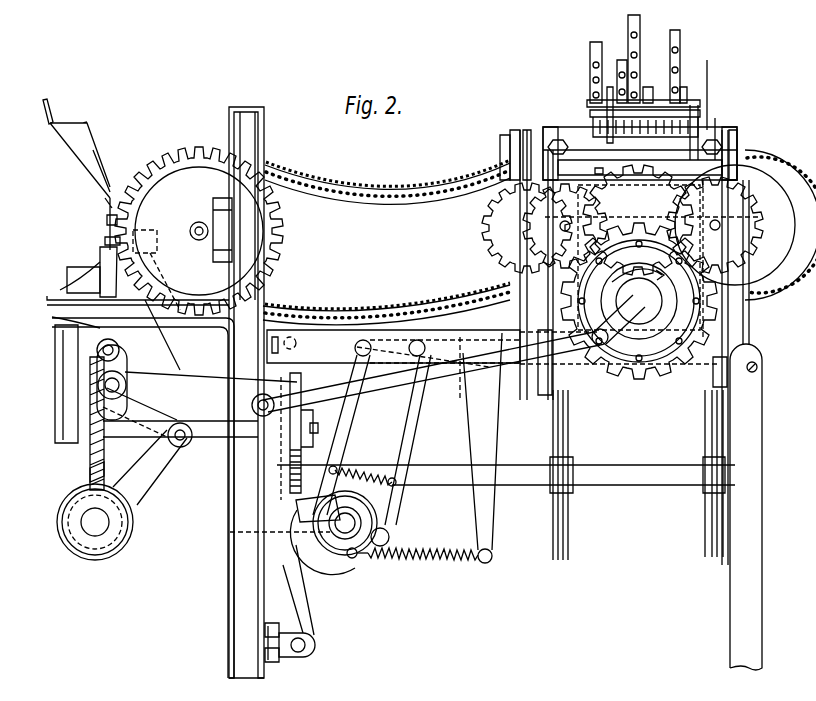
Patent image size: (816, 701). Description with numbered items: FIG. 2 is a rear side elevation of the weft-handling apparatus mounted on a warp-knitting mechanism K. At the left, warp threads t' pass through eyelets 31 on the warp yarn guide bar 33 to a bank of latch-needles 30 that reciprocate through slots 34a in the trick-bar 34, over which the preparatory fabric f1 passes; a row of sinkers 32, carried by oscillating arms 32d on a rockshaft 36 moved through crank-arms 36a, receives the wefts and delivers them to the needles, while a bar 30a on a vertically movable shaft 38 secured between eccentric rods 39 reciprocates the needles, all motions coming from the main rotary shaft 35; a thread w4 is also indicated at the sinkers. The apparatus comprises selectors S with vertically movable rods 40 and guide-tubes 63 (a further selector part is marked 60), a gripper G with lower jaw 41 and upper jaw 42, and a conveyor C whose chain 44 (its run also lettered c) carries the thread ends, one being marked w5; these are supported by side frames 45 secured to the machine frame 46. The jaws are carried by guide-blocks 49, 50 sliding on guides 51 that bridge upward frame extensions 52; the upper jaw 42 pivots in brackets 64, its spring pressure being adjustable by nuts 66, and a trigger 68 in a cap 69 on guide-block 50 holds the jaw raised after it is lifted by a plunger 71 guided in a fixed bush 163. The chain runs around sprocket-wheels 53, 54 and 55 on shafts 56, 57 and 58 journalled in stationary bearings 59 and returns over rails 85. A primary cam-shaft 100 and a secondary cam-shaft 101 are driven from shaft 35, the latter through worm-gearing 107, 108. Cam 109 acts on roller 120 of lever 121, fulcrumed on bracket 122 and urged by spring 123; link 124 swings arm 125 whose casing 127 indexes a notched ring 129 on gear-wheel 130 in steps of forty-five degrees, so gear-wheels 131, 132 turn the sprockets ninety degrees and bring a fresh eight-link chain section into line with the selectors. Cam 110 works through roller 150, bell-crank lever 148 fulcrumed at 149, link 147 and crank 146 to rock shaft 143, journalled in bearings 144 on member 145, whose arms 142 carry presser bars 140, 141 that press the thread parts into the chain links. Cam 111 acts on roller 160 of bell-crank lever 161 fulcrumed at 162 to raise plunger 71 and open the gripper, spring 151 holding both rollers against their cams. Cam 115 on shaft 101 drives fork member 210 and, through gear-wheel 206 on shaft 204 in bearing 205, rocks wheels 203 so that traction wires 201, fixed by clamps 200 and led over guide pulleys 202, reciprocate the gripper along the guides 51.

The knitting mechanism K is at (128, 170).
The frame of the knitting machine 46 is at (152, 487).
The warp threads t' is at (56, 106).
The warp yarn guide bar 33 is at (92, 140).
The eyelets 31 is at (108, 200).
The sinkers 32 is at (107, 220).
The key w4 is at (110, 232).
The slots 34a is at (105, 241).
The trick-bar 34 is at (100, 250).
The latch-needles 30 is at (100, 262).
The finger f1 is at (60, 290).
The bar 30a is at (63, 318).
The sprocket-wheels 55 is at (199, 231).
The shaft 58 is at (199, 224).
The stationary bearings 59 is at (205, 242).
The oscillating arms 32d is at (175, 350).
The conveyor C is at (387, 182).
The chain link w5 is at (352, 192).
The conveyor chain 44 is at (372, 195).
The chain c is at (600, 226).
The link 147 is at (500, 210).
The gear-wheel 132 is at (505, 240).
The shaft 57 is at (558, 224).
The sprocket-wheels 54 is at (548, 202).
The upward extensions 52 is at (590, 217).
The shaft 56 is at (722, 225).
The sprocket-wheels 53 is at (745, 220).
The gear-wheel 131 is at (760, 240).
The notched ring 129 is at (638, 376).
The gear-wheel 130 is at (662, 376).
The plunger 71 is at (628, 296).
The arm 125 is at (628, 311).
The small casing 127 is at (609, 339).
The selectors S is at (654, 59).
The selector rods 40 is at (592, 52).
The bar 60 is at (596, 62).
The guide-tubes 63 is at (596, 70).
The nuts 66 is at (666, 86).
The arms 142 is at (684, 90).
The presser bar 140 is at (590, 100).
The presser bar 141 is at (590, 113).
The gripper G is at (713, 88).
The brackets 64 is at (562, 130).
The guides 51 is at (555, 130).
The trigger 68 is at (560, 138).
The cap 69 is at (558, 132).
The guide-block 50 is at (560, 137).
The clamp 200 is at (535, 132).
The guide pulleys 202 is at (530, 136).
The rock-shaft 143 is at (522, 135).
The crank 146 is at (525, 145).
The lower jaw 41 is at (700, 125).
The upper jaw 42 is at (705, 130).
The guide-block 49 is at (725, 128).
The fixed bush 163 is at (605, 172).
The bridging member 145 is at (652, 174).
The bearings 144 is at (700, 160).
The traction wires 201 is at (728, 318).
The wheels 203 is at (571, 521).
The shaft 204 is at (506, 475).
The stationary bearing 205 is at (722, 504).
The side frames 45 is at (746, 507).
The rails 85 is at (493, 354).
The fulcrum 149 is at (355, 354).
The bell-crank lever 148 is at (410, 356).
The link 124 is at (294, 401).
The fulcrum 162 is at (417, 357).
The bell-crank lever 161 is at (470, 395).
The cam 115 is at (211, 372).
The fork member 210 is at (318, 426).
The gear-wheel 206 is at (302, 470).
The spring 151 is at (362, 468).
The cam 110 is at (352, 497).
The primary cam-shaft 100 is at (345, 523).
The roller 150 is at (314, 508).
The roller 160 is at (390, 537).
The cam 109 is at (340, 568).
The cam 111 is at (372, 568).
The spring 123 is at (430, 562).
The roller 120 is at (230, 534).
The lever 121 is at (280, 587).
The stationary bracket 122 is at (285, 645).
The vertically movable shaft 38 is at (97, 350).
The rockshaft 36 is at (126, 378).
The crank-arms 36a is at (160, 412).
The secondary cam-shaft 101 is at (200, 440).
The eccentric rods 39 is at (90, 462).
The worm-gearing 108 is at (92, 478).
The worm-gearing 107 is at (78, 493).
The main rotary shaft 35 is at (105, 522).